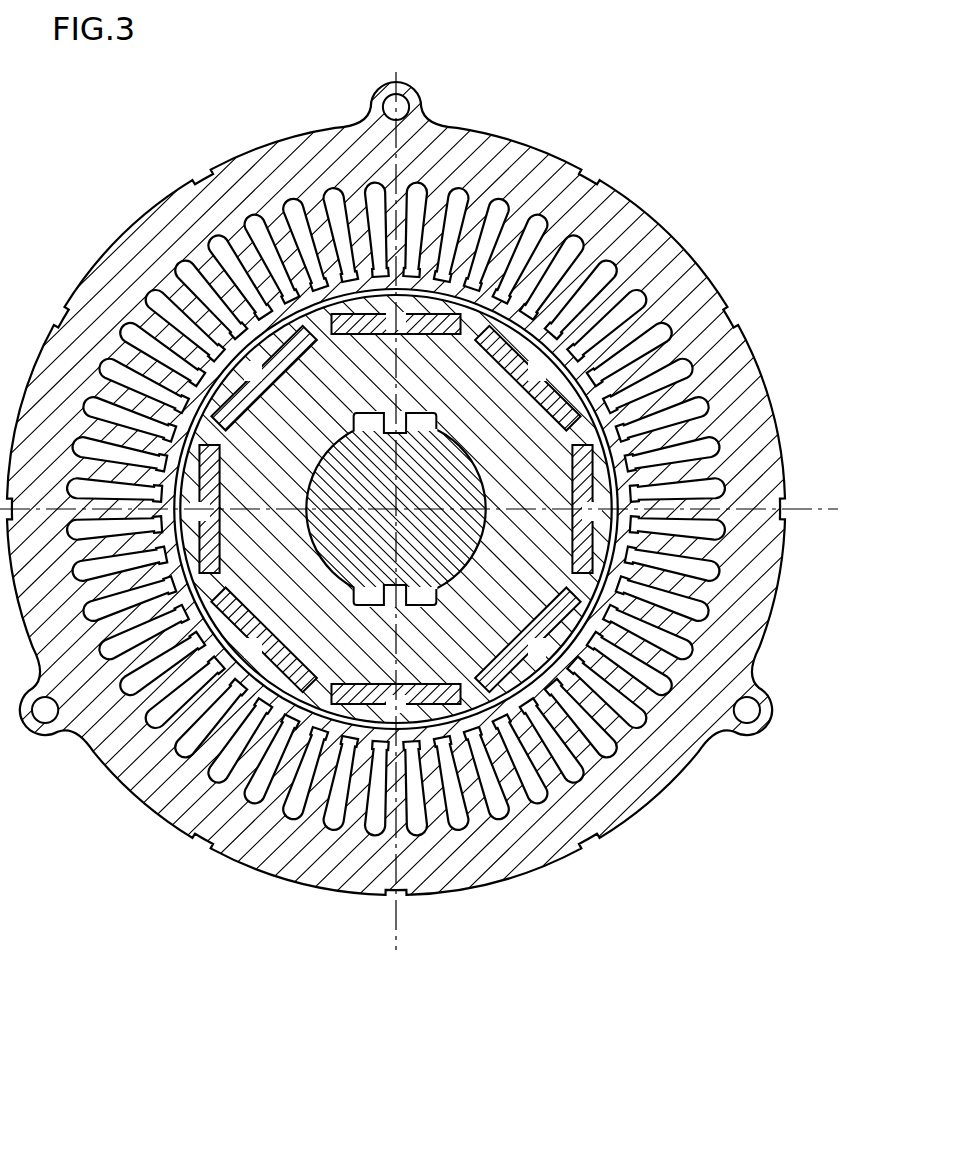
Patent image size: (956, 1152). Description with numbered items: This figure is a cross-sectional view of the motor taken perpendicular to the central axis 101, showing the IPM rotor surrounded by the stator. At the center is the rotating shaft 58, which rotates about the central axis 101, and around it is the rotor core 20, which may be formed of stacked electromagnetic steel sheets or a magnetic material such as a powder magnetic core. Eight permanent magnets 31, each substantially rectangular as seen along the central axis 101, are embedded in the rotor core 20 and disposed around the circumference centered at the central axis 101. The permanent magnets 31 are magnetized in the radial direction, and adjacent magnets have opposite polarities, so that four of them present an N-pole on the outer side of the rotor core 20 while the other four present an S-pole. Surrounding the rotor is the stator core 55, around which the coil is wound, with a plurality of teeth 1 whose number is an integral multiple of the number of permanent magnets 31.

The teeth 1 is at (357, 222).
The stator core 55 is at (688, 250).
The central axis 101 is at (403, 500).
The rotor core 20 is at (425, 725).
The permanent magnets 31 is at (352, 335).
The rotating shaft 58 is at (467, 525).